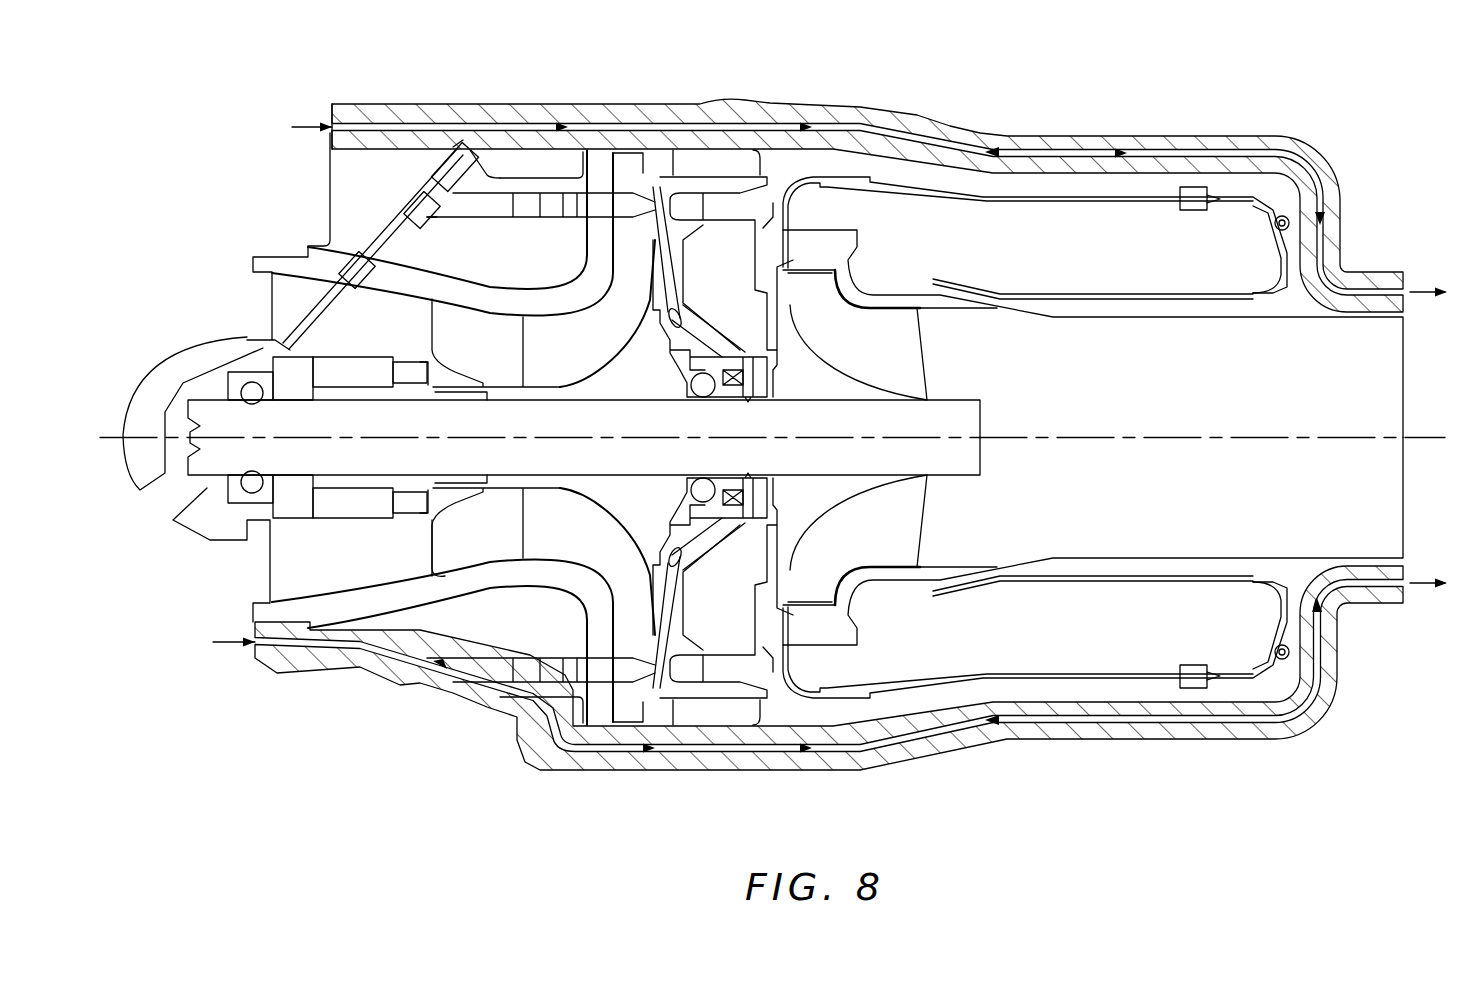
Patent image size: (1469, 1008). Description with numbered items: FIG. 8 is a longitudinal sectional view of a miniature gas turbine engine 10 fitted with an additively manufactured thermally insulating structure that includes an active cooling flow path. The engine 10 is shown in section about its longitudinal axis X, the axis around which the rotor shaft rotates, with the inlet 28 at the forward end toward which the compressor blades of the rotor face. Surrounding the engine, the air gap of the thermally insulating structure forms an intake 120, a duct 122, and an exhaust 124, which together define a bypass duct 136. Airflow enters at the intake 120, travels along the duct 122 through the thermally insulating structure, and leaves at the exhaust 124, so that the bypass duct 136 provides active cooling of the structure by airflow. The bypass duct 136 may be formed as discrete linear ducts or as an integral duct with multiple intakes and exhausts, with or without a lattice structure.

The miniature gas turbine engine 10 is at (238, 242).
The inlet 28 is at (262, 590).
The intake 120 is at (326, 127).
The duct 122 is at (970, 147).
The exhaust 124 is at (1413, 290).
The bypass duct 136 is at (734, 113).
The longitudinal axis X is at (1436, 440).